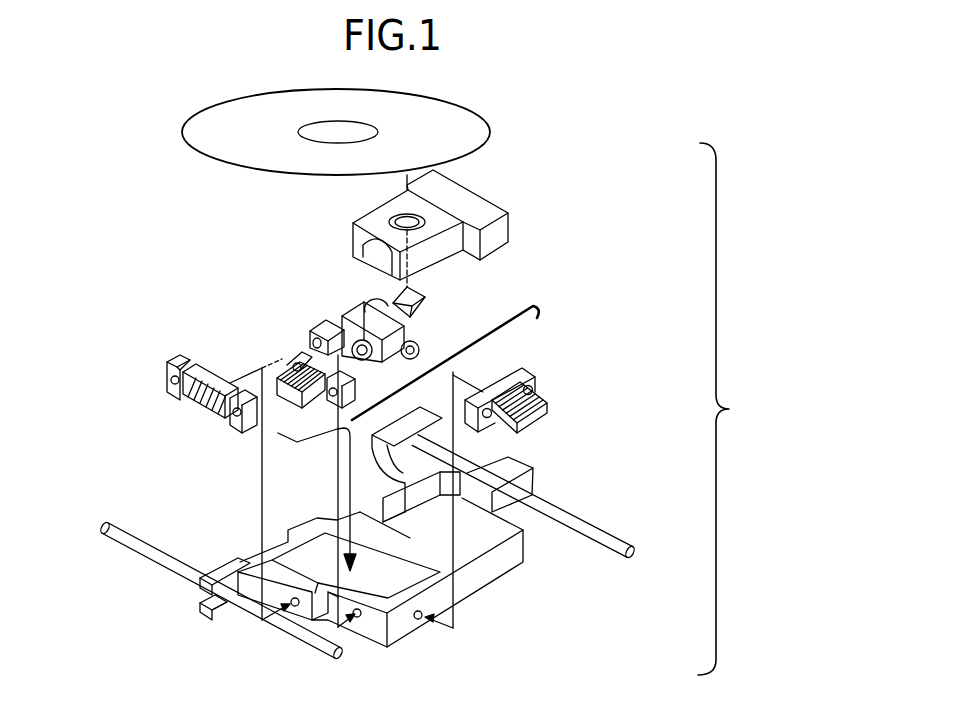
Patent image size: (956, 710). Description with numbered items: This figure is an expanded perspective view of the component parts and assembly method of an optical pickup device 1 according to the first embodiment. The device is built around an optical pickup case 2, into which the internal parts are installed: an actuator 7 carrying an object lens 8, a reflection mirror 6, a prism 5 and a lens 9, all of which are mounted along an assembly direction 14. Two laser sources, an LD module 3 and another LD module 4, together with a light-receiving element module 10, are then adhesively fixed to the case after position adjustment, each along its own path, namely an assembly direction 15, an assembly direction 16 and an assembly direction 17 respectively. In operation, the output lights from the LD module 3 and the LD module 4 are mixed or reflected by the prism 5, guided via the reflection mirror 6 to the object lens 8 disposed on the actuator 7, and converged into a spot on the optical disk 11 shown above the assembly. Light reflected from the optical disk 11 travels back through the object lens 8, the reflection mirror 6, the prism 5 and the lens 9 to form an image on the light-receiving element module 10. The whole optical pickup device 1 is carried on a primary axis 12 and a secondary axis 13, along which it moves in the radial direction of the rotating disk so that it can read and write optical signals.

The optical pickup device 1 is at (726, 409).
The optical pickup case 2 is at (483, 583).
The LD module 3 is at (522, 378).
The LD module 4 is at (292, 353).
The prism 5 is at (353, 307).
The reflection mirror 6 is at (422, 305).
The actuator 7 is at (433, 258).
The object lens 8 is at (390, 222).
The lens 9 is at (320, 325).
The light-receiving element module 10 is at (165, 357).
The optical disk 11 is at (475, 130).
The primary axis 12 is at (610, 540).
The secondary axis 13 is at (140, 550).
The assembly direction 14 is at (347, 480).
The assembly direction 15 is at (453, 623).
The assembly direction 16 is at (337, 507).
The assembly direction 17 is at (262, 463).